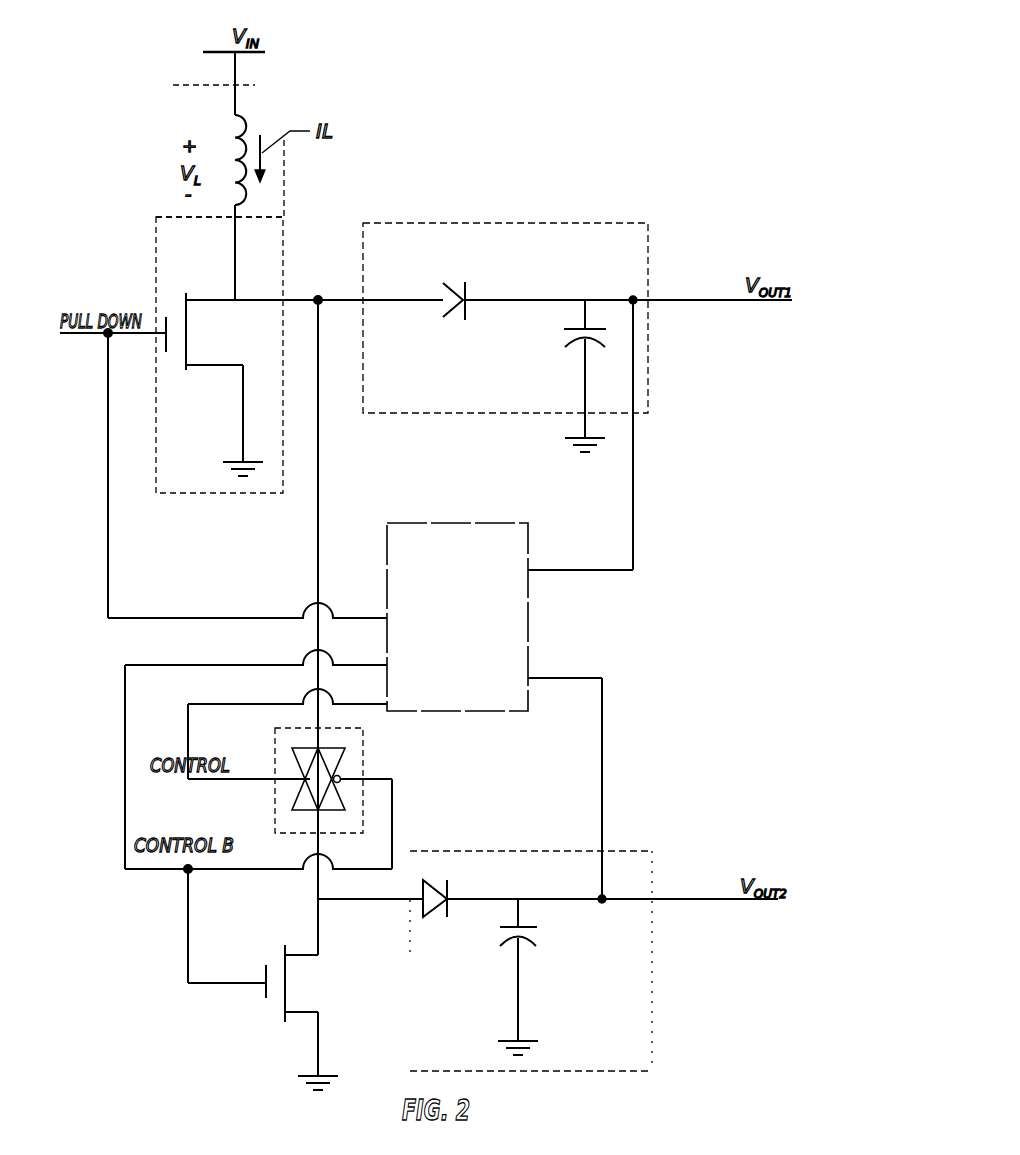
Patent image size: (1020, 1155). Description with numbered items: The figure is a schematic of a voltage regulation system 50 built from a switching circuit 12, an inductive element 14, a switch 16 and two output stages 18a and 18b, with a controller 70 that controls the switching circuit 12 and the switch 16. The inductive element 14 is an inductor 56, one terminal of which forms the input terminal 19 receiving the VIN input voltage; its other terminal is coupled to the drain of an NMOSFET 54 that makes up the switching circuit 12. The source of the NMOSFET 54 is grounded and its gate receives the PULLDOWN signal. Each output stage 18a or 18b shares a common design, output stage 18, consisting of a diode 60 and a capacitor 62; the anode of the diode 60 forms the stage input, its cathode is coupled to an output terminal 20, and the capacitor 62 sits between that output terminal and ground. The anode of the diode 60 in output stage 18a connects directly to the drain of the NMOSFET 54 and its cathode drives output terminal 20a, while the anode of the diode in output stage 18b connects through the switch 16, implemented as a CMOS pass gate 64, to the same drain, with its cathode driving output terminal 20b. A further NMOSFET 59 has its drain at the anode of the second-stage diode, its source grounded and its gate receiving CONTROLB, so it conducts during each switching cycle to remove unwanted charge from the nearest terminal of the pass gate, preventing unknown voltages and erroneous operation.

The voltage regulation system 50 is at (726, 139).
The input terminal 19 is at (264, 61).
The inductor 56 is at (290, 186).
The inductive element 14 is at (260, 151).
The switching circuit 12 is at (170, 355).
The NMOSFET 54 is at (185, 384).
The output stage 18 is at (507, 625).
The first output stage 18a is at (505, 296).
The second output stage 18b is at (531, 942).
The diode 60 is at (555, 624).
The capacitor 62 is at (528, 675).
The output terminal 20 is at (778, 620).
The first output terminal 20a is at (802, 320).
The second output terminal 20b is at (755, 920).
The controller 70 is at (494, 617).
The pass gate 64 is at (358, 762).
The switch 16 is at (355, 780).
The NMOSFET 59 is at (283, 1017).